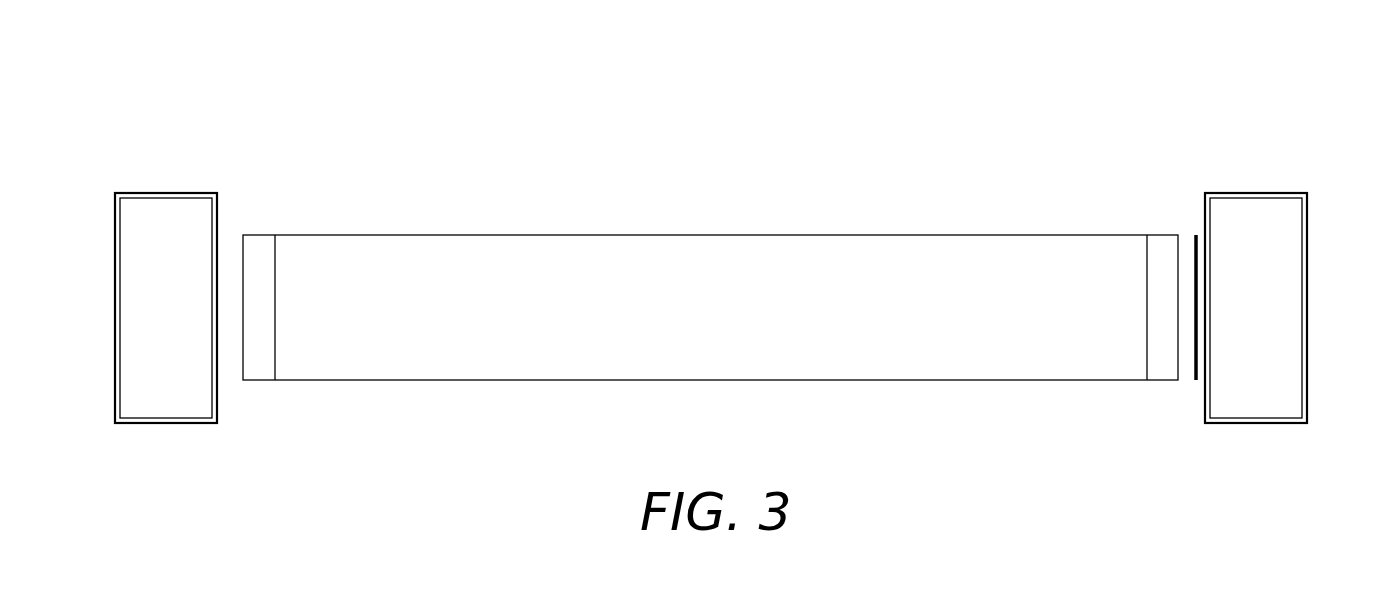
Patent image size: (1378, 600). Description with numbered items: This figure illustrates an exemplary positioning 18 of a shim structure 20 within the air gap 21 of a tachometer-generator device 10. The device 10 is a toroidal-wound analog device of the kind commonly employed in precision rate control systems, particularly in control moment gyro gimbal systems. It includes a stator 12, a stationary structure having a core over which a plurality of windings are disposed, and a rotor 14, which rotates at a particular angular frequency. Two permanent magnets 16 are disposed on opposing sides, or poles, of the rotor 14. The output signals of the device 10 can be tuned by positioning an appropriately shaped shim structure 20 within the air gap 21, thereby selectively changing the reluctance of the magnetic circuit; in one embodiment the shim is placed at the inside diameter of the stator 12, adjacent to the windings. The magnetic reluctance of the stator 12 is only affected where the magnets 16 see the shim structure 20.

The positioning 18 is at (98, 74).
The tachometer-generator device 10 is at (115, 306).
The stator 12 is at (1307, 307).
The rotor 14 is at (692, 247).
The permanent magnets 16 is at (1150, 308).
The shim structure 20 is at (1192, 378).
The air gap 21 is at (230, 212).